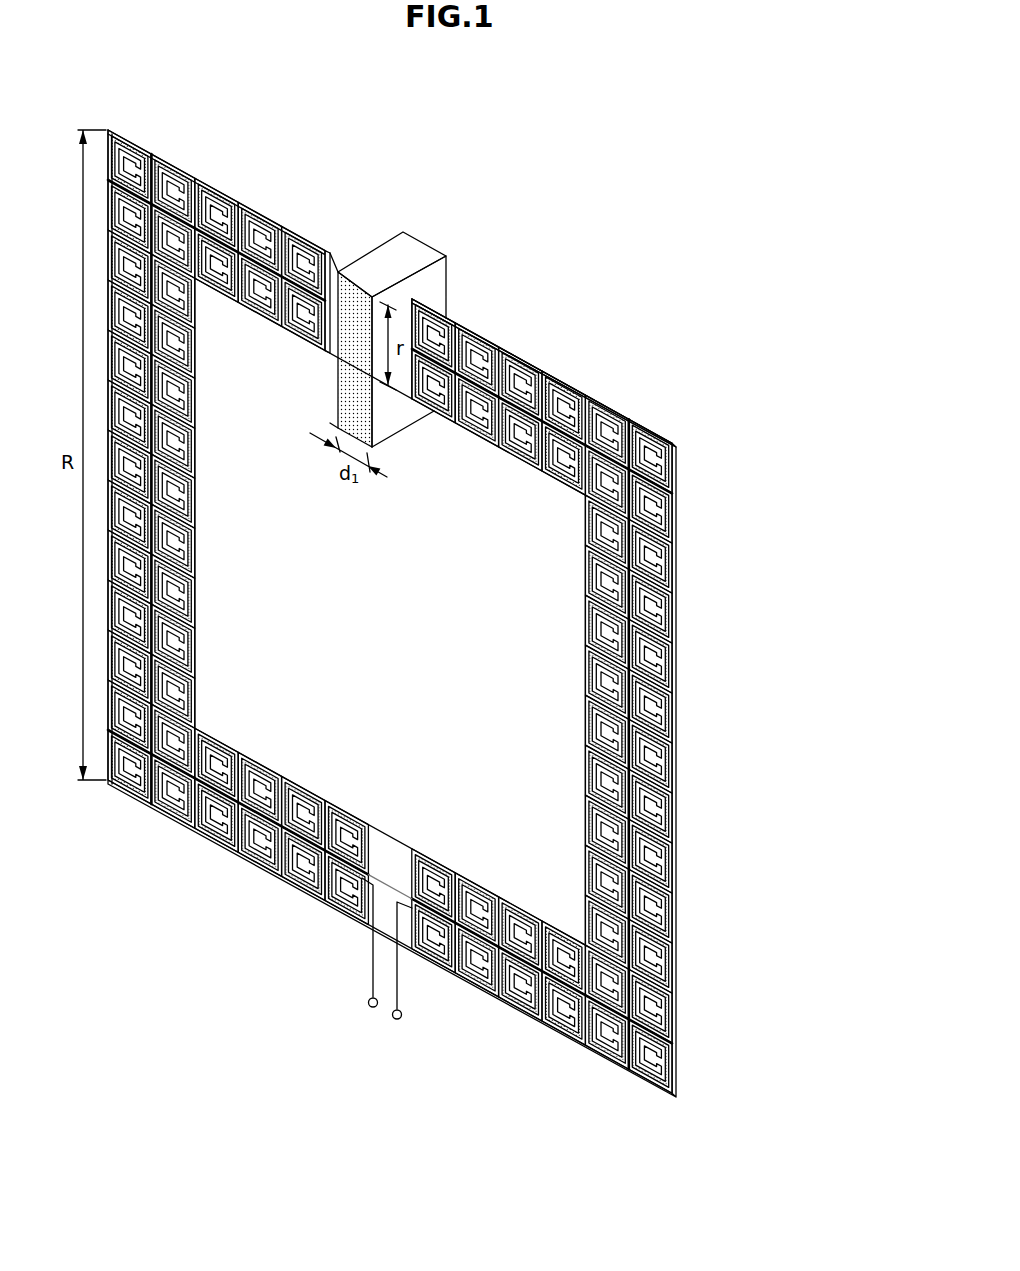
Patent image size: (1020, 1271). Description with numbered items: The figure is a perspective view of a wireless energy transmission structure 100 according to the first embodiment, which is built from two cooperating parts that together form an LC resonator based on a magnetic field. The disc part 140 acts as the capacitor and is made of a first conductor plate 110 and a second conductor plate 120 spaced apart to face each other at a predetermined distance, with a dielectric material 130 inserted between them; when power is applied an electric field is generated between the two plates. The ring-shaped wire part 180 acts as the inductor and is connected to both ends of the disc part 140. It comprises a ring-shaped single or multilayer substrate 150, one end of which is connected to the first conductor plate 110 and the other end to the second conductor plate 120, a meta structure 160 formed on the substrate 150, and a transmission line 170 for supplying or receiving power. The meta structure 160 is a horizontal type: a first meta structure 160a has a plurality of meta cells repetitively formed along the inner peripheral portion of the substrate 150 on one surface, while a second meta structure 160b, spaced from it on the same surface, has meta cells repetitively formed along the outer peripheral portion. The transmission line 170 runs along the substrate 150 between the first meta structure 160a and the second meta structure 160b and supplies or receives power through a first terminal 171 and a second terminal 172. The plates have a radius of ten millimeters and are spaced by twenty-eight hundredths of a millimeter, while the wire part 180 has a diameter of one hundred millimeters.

The wireless energy transmission structure 100 is at (302, 91).
The first conductor plate 110 is at (417, 346).
The second conductor plate 120 is at (446, 260).
The dielectric material 130 is at (418, 251).
The disc part 140 is at (412, 440).
The substrate 150 is at (588, 402).
The meta structure 160 is at (719, 744).
The first meta structure 160a is at (668, 527).
The second meta structure 160b is at (620, 556).
The transmission line 170 is at (627, 618).
The first terminal 171 is at (367, 1003).
The second terminal 172 is at (400, 1019).
The wire part 180 is at (527, 340).